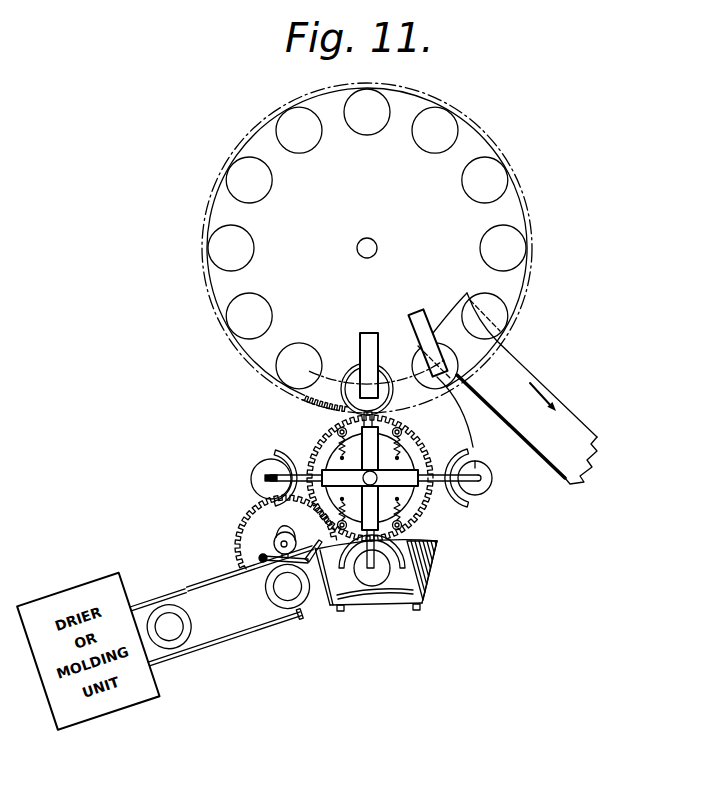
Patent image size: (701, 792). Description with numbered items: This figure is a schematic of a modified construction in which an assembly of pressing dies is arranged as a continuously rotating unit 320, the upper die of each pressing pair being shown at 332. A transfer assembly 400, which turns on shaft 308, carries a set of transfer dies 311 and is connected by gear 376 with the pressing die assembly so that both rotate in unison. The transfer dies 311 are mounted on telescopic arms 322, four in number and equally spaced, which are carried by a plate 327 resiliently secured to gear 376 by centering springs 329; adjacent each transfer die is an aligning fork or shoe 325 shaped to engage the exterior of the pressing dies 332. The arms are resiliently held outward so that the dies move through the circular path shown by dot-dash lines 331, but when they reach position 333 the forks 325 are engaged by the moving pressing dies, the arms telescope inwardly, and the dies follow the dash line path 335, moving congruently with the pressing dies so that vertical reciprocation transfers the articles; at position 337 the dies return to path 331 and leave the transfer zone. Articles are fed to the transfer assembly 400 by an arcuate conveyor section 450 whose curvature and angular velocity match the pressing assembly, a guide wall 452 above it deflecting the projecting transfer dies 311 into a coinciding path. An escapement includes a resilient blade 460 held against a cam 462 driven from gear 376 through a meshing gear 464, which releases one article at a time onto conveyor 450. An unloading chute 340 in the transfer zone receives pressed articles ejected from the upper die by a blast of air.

The pressing die assembly 320 is at (540, 207).
The upper pressing die 332 is at (408, 357).
The dash line path 335 is at (374, 374).
The transfer die position 333 is at (391, 385).
The return position 337 is at (327, 399).
The telescopic arm 322 is at (318, 450).
The aligning fork or shoe 325 is at (266, 453).
The gear 376 is at (392, 475).
The circular path 331 is at (472, 450).
The shaft 308 is at (378, 478).
The transfer die 311 is at (487, 487).
The unloading chute 340 is at (562, 482).
The plate 327 is at (420, 514).
The transfer assembly 400 is at (441, 504).
The centering springs 329 is at (415, 532).
The curved conveyor section 450 is at (402, 586).
The guide wall 452 is at (383, 596).
The resilient blade 460 is at (362, 546).
The cam 462 is at (288, 532).
The meshing gear 464 is at (247, 532).